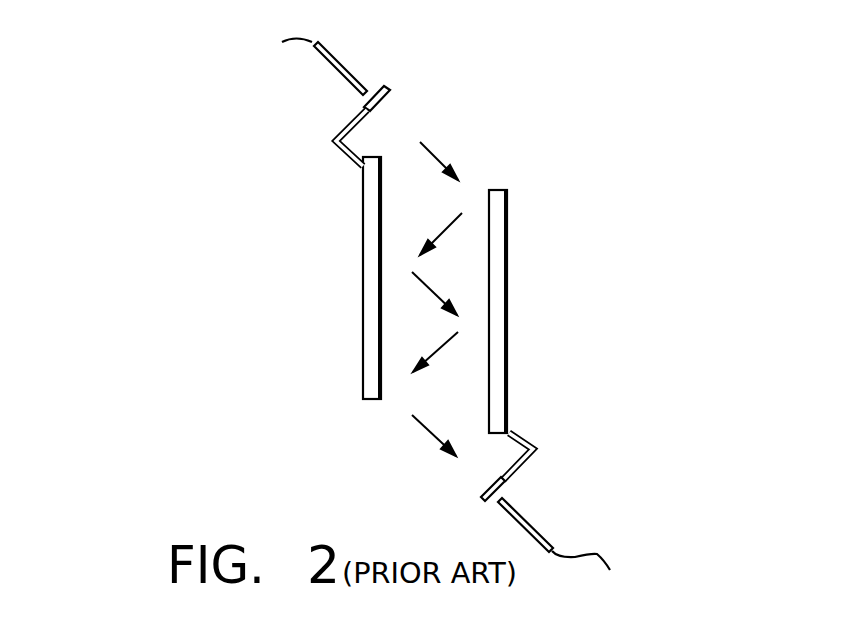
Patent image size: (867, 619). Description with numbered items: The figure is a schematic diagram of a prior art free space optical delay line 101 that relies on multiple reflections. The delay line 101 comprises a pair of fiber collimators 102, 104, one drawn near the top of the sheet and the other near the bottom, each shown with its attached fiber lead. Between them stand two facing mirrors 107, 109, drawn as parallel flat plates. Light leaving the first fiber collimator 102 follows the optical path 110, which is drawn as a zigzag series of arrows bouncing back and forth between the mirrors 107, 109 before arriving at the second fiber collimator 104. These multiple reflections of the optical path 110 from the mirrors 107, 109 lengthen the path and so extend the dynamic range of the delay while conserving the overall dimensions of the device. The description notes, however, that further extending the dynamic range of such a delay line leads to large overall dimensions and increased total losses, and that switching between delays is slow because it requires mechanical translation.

The delay line 101 is at (584, 120).
The fiber collimator 102 is at (340, 73).
The fiber collimator 104 is at (527, 513).
The mirror 107 is at (507, 292).
The mirror 109 is at (363, 277).
The optical path 110 is at (437, 145).